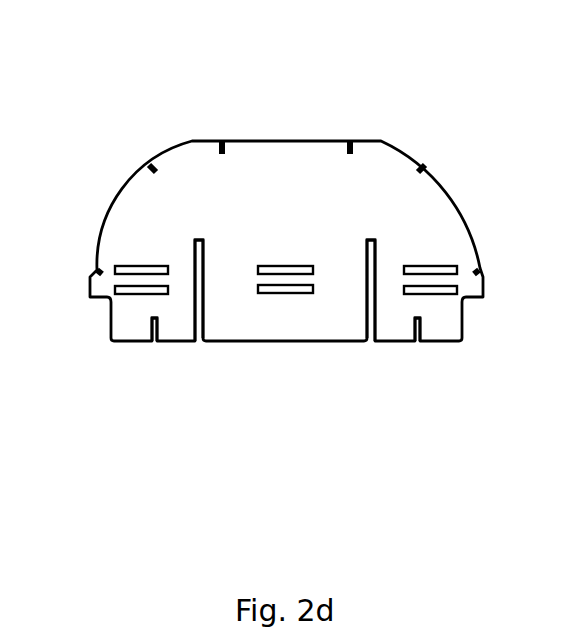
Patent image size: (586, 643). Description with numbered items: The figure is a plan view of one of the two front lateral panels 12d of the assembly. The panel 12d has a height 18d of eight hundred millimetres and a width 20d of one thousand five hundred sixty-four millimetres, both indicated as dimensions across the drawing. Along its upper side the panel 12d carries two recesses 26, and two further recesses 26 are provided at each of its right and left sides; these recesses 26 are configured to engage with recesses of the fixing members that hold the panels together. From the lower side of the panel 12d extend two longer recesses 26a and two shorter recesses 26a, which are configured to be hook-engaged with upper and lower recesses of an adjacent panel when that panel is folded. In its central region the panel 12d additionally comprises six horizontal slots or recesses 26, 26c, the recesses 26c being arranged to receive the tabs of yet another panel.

The front lateral panel 12d is at (115, 83).
The height 18d is at (213, 336).
The width 20d is at (482, 278).
The recesses 26 is at (224, 149).
The recesses 26a is at (204, 292).
The recesses 26c is at (165, 266).